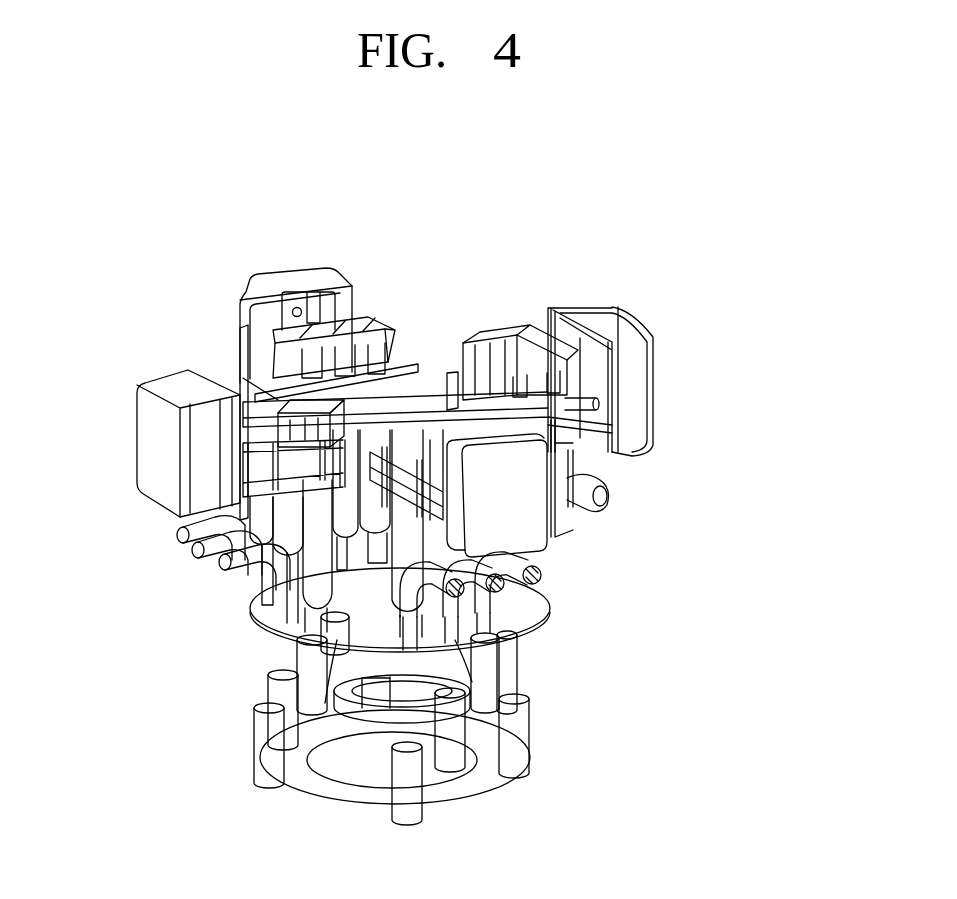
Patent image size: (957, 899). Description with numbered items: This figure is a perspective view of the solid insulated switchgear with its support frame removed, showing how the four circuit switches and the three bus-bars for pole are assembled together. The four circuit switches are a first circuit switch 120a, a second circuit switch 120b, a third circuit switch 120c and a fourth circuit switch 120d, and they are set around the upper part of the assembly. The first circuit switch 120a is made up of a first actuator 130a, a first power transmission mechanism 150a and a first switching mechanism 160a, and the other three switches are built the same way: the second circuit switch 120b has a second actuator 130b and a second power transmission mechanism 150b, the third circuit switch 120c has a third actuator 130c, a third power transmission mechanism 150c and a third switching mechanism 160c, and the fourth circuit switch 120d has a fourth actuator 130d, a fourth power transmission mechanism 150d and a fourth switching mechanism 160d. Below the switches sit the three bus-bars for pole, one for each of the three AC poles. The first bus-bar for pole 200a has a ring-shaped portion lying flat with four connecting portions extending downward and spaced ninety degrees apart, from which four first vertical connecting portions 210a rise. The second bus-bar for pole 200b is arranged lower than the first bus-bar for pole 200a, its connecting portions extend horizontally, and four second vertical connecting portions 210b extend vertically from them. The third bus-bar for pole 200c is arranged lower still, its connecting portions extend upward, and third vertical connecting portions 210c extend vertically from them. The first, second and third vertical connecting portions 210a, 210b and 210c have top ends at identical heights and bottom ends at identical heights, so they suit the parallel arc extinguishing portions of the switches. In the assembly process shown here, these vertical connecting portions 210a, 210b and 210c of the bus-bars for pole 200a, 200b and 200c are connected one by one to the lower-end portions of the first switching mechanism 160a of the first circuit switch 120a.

The first circuit switch 120a is at (122, 441).
The second circuit switch 120b is at (267, 263).
The third circuit switch 120c is at (668, 337).
The fourth circuit switch 120d is at (562, 551).
The first actuator 130a is at (170, 380).
The second actuator 130b is at (342, 263).
The third actuator 130c is at (592, 318).
The fourth actuator 130d is at (548, 520).
The first power transmission mechanism 150a is at (232, 382).
The second power transmission mechanism 150b is at (375, 320).
The third power transmission mechanism 150c is at (472, 322).
The fourth power transmission mechanism 150d is at (515, 418).
The first switching mechanism 160a is at (228, 562).
The third switching mechanism 160c is at (607, 498).
The fourth switching mechanism 160d is at (540, 579).
The first bus-bar for pole 200a is at (283, 637).
The second bus-bar for pole 200b is at (380, 715).
The third bus-bar for pole 200c is at (338, 790).
The first vertical connecting portions 210a is at (303, 662).
The second vertical connecting portions 210b is at (270, 690).
The third vertical connecting portions 210c is at (258, 752).